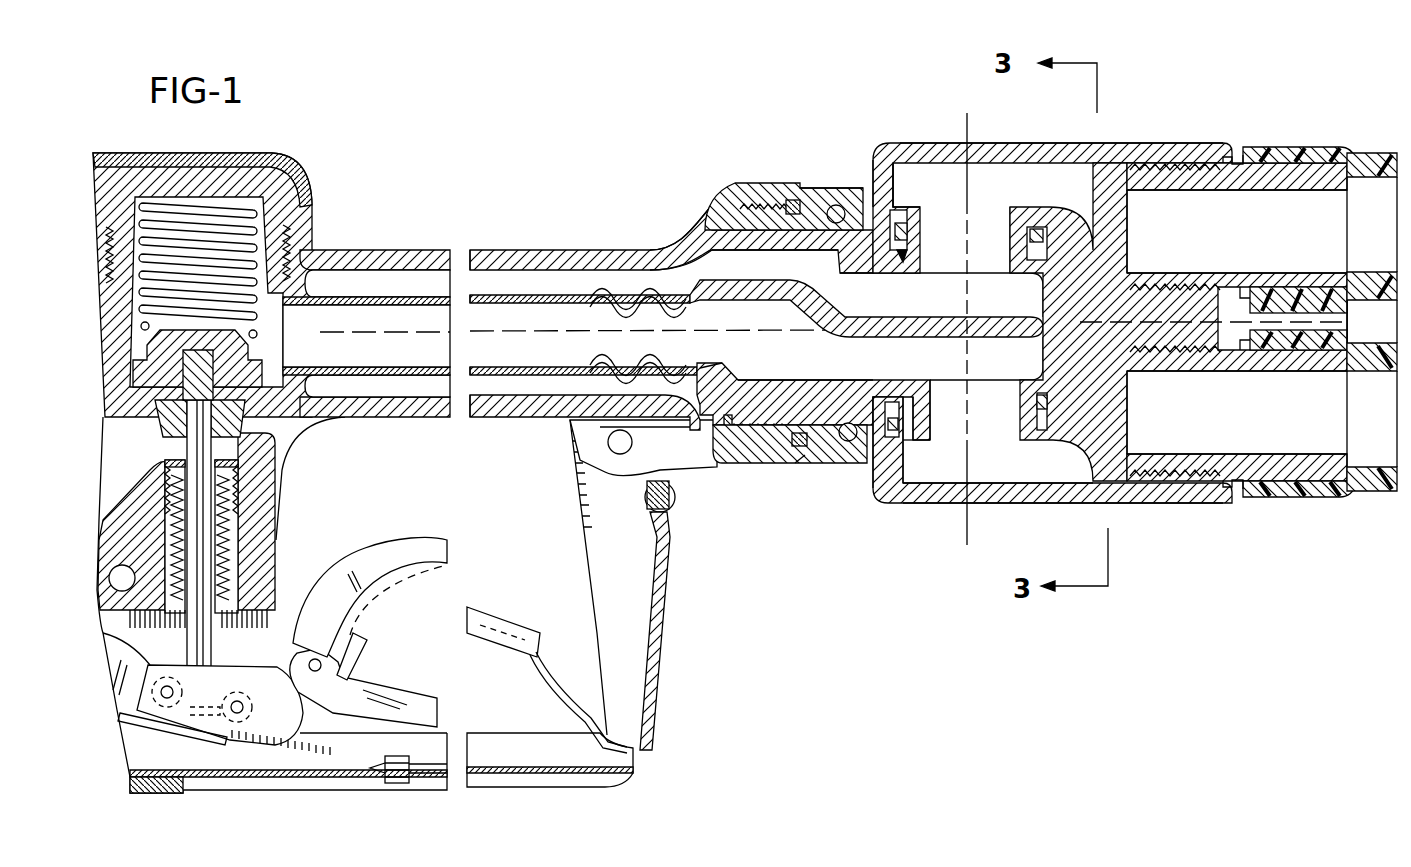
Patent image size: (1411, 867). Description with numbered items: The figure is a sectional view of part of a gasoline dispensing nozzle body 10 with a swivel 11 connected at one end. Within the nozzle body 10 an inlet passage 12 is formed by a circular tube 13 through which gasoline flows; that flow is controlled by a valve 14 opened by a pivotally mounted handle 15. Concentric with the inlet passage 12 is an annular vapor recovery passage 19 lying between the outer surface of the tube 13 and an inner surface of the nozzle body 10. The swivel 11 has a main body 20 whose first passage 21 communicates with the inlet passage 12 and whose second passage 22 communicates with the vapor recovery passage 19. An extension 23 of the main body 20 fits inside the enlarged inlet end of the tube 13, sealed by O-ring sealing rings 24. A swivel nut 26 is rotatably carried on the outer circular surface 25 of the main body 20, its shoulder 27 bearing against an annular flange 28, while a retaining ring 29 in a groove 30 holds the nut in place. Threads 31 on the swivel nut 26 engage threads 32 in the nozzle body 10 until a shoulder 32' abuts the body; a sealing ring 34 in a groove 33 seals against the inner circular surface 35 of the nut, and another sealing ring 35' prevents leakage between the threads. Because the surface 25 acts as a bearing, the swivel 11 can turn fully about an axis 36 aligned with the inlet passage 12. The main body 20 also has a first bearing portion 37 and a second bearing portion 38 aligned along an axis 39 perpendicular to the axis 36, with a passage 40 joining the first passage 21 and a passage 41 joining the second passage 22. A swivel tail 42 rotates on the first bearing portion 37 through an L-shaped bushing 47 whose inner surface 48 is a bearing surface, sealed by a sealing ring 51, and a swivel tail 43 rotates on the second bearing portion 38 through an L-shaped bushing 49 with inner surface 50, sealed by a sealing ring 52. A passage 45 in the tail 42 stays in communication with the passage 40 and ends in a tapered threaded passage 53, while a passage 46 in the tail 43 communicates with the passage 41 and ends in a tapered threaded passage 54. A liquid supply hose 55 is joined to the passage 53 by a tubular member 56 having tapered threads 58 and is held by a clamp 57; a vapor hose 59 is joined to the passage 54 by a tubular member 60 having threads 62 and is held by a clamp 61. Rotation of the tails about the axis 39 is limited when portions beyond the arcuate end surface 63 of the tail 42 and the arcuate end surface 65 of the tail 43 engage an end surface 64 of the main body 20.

The liquid dispensing nozzle body 10 is at (467, 234).
The swivel 11 is at (914, 132).
The inlet passage 12 is at (398, 318).
The tube 13 is at (505, 297).
The valve 14 is at (266, 342).
The handle 15 is at (487, 606).
The vapor recovery passage 19 is at (548, 272).
The main body 20 is at (718, 424).
The first passage 21 is at (836, 368).
The second passage 22 is at (887, 311).
The extension 23 is at (605, 365).
The sealing rings 24 is at (650, 288).
The outer circular surface 25 is at (745, 195).
The swivel nut 26 is at (813, 186).
The shoulder 27 is at (836, 204).
The annular flange 28 is at (800, 448).
The retaining ring 29 is at (712, 232).
The groove 30 is at (726, 415).
The threads 31 is at (757, 200).
The threads 32 is at (790, 467).
The shoulder 32' is at (779, 174).
The groove 33 is at (850, 250).
The sealing ring 34 is at (775, 270).
The inner circular surface 35 is at (843, 470).
The sealing ring 35' is at (787, 497).
The axis 36 is at (742, 359).
The first bearing portion 37 is at (915, 445).
The second bearing portion 38 is at (913, 175).
The axis 39 is at (965, 546).
The passage 40 is at (970, 414).
The passage 41 is at (981, 225).
The swivel tail 42 is at (1048, 503).
The swivel tail 43 is at (1031, 143).
The passage 45 is at (990, 473).
The passage 46 is at (925, 160).
The L-shaped bushing 47 is at (1035, 376).
The inner surface 48 is at (933, 398).
The L-shaped bushing 49 is at (1070, 228).
The inner surface 50 is at (910, 255).
The sealing ring 51 is at (1045, 432).
The sealing ring 52 is at (1038, 227).
The tapered threaded passage 53 is at (1180, 462).
The tapered threaded passage 54 is at (1190, 170).
The hose 55 is at (1378, 491).
The tubular member 56 is at (1236, 489).
The clamp 57 is at (1312, 497).
The threads 58 is at (1203, 486).
The hose 59 is at (1370, 153).
The tubular member 60 is at (1233, 158).
The clamp 61 is at (1287, 147).
The threads 62 is at (1147, 163).
The end surface 63 is at (877, 460).
The end surface 64 is at (893, 402).
The end surface 65 is at (872, 200).